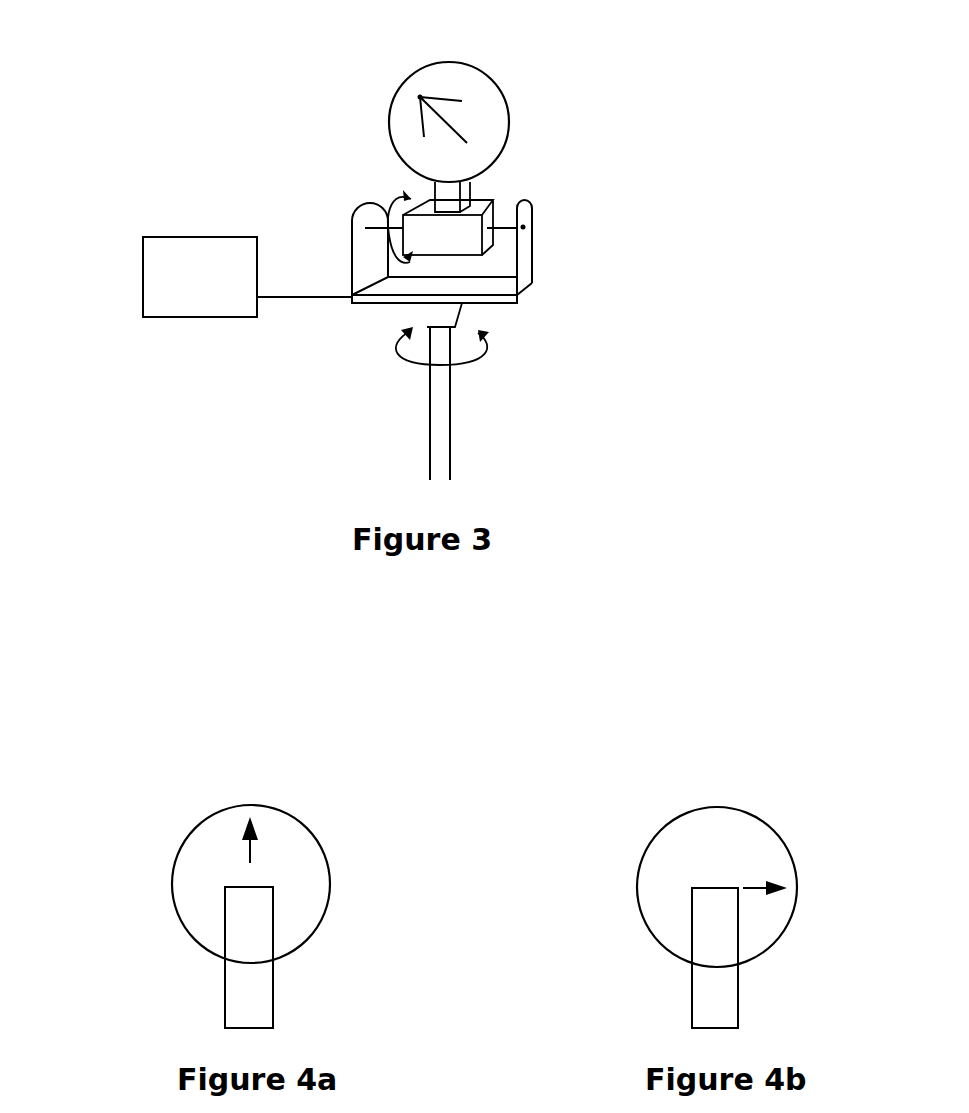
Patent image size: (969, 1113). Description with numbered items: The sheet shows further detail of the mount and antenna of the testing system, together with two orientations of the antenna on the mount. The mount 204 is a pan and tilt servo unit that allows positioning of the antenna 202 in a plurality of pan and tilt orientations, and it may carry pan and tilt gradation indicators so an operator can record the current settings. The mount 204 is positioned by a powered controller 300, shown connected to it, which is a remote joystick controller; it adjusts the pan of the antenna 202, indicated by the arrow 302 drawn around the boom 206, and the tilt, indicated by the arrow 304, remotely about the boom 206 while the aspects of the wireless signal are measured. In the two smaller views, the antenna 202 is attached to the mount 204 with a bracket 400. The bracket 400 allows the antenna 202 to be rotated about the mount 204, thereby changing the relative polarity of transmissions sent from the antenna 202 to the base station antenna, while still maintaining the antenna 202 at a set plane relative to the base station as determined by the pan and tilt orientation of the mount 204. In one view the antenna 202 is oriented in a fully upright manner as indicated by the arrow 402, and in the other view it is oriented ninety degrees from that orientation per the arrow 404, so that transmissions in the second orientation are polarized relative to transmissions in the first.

In FIG. 3, the antenna 202 is at (462, 73).
In FIG. 4A, the antenna 202 is at (200, 858).
In FIG. 4B, the antenna 202 is at (665, 860).
In FIG. 3, the mount 204 is at (535, 192).
In FIG. 3, the boom 206 is at (443, 397).
In FIG. 3, the powered controller 300 is at (170, 238).
In FIG. 3, the arrow 302 is at (417, 346).
In FIG. 3, the arrow 304 is at (408, 197).
In FIG. 4A, the bracket 400 is at (240, 998).
In FIG. 4B, the bracket 400 is at (705, 998).
In FIG. 4A, the arrow 402 is at (262, 822).
In FIG. 4B, the arrow 404 is at (757, 895).